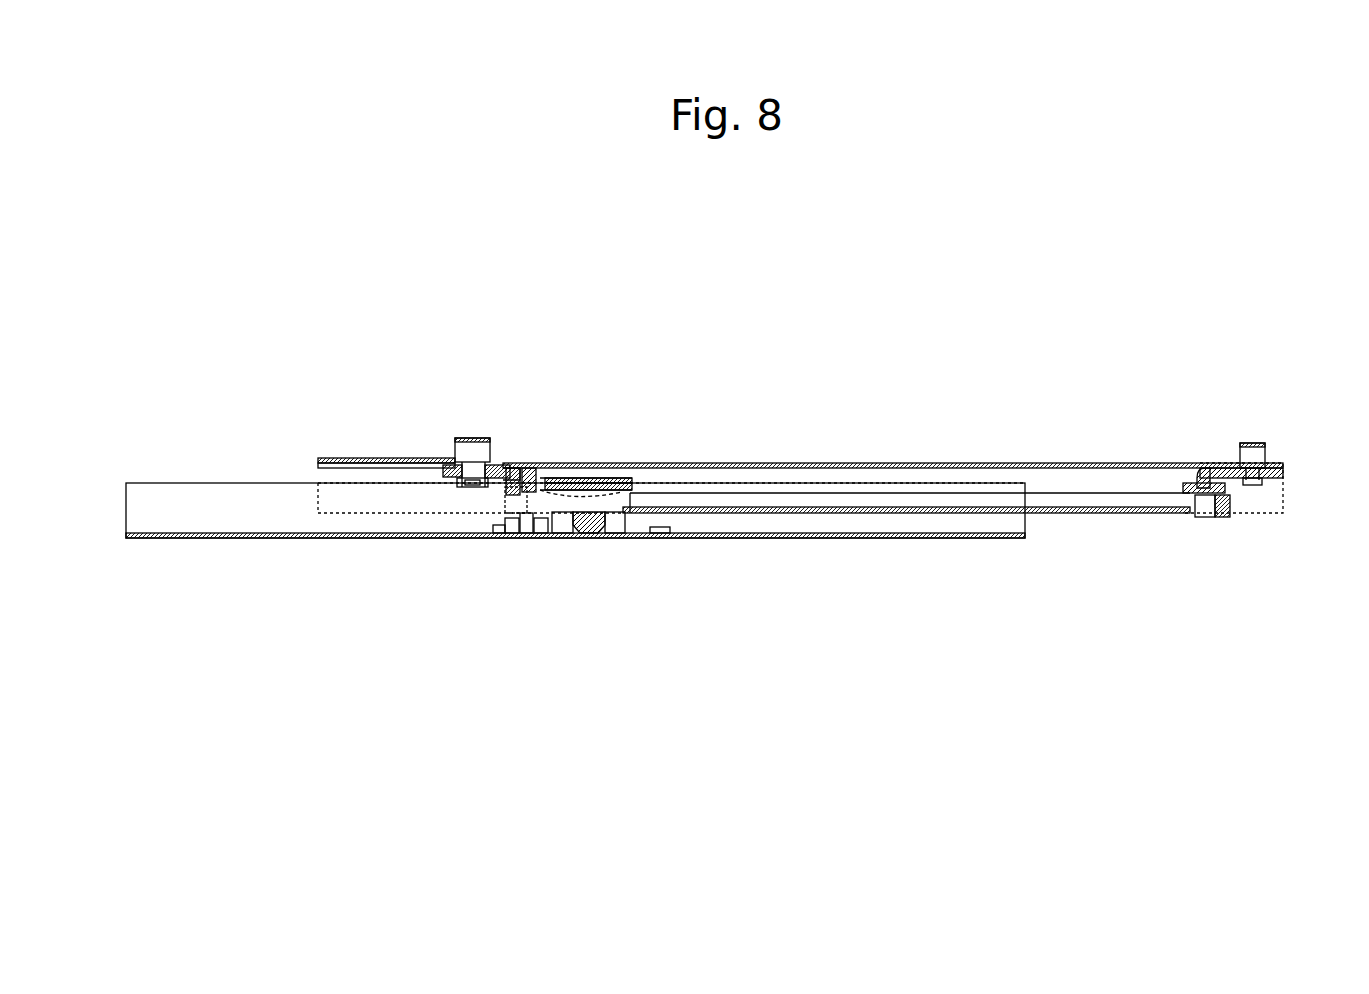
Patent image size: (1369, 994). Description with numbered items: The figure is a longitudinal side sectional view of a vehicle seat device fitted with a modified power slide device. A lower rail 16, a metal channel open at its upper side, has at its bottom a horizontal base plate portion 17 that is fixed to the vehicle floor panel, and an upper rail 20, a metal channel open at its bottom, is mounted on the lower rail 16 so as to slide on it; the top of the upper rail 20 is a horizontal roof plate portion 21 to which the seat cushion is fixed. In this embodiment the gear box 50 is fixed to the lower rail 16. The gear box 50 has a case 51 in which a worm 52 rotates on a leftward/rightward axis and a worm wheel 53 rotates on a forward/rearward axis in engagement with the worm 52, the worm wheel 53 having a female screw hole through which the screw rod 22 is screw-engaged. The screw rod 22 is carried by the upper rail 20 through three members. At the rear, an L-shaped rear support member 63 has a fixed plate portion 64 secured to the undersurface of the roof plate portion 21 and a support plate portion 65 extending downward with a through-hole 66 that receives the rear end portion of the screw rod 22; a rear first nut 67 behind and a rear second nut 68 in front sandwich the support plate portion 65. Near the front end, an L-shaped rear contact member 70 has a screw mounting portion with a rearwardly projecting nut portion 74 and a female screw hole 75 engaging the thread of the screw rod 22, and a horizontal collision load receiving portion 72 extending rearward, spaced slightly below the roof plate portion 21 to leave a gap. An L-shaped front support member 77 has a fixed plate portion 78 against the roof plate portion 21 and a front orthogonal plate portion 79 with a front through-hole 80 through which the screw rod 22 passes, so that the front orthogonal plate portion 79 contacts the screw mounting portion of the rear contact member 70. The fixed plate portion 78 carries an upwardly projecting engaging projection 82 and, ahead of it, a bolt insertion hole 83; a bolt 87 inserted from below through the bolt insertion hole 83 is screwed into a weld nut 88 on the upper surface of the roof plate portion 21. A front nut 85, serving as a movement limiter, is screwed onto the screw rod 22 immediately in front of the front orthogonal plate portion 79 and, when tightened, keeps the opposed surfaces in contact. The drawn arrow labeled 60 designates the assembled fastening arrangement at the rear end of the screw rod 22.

The lower rail 16 is at (200, 490).
The base plate portion 17 is at (315, 540).
The upper rail 20 is at (1283, 493).
The roof plate portion 21 is at (720, 463).
The screw rod 22 is at (862, 512).
The gear box 50 is at (620, 517).
The case 51 is at (622, 466).
The worm 52 is at (588, 535).
The worm wheel 53 is at (610, 537).
The fastening assembly 60 is at (1243, 526).
The rear support member 63 is at (1304, 449).
The fixed plate portion 64 is at (1252, 476).
The support plate portion 65 is at (1205, 518).
The through-hole 66 is at (1210, 497).
The rear first nut 67 is at (1215, 547).
The rear second nut 68 is at (1185, 518).
The rear contact member 70 is at (586, 422).
The collision load receiving portion 72 is at (552, 468).
The nut portion 74 is at (543, 533).
The female screw hole 75 is at (600, 468).
The front support member 77 is at (472, 576).
The fixed plate portion 78 is at (513, 466).
The front orthogonal plate portion 79 is at (510, 518).
The front through-hole 80 is at (505, 497).
The engaging projection 82 is at (505, 463).
The bolt insertion hole 83 is at (457, 487).
The front nut 85 is at (533, 470).
The bolt 87 is at (457, 452).
The weld nut 88 is at (455, 447).